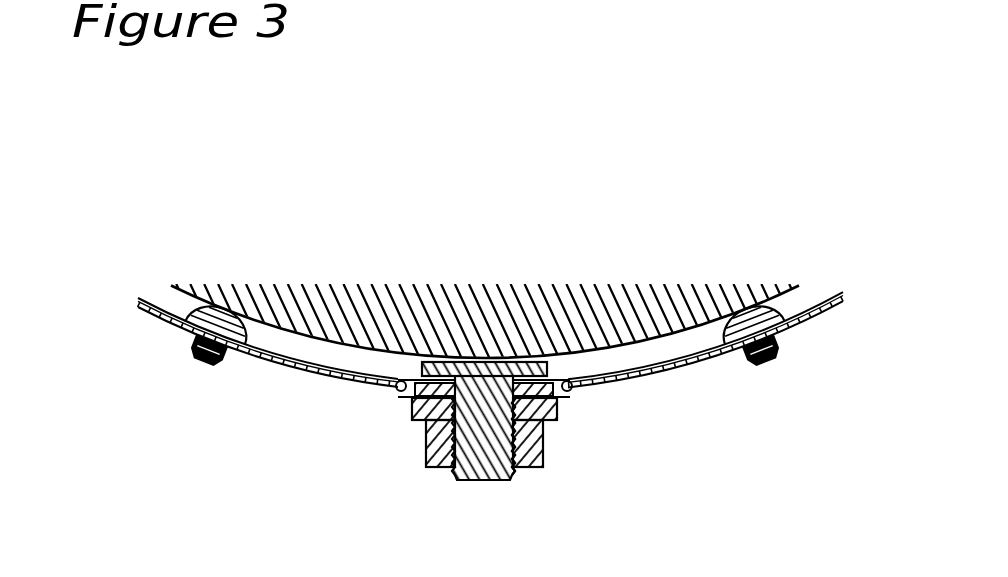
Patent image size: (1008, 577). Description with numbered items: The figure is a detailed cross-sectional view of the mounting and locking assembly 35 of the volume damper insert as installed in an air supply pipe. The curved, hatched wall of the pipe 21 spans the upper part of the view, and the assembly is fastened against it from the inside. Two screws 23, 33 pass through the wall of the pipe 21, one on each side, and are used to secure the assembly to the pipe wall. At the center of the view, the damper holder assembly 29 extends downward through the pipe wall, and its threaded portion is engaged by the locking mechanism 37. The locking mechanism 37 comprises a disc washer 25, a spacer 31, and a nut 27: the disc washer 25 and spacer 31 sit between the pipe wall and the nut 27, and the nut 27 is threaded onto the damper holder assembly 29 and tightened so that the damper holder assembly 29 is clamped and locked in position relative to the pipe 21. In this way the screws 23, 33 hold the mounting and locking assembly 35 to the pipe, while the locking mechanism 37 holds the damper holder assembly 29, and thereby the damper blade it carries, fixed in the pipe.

The pipe 21 is at (150, 304).
The screw 23 is at (205, 366).
The disc washer 25 is at (395, 392).
The nut 27 is at (425, 448).
The damper holder assembly 29 is at (478, 485).
The spacer 31 is at (560, 408).
The screw 33 is at (772, 358).
The mounting and locking assembly 35 is at (594, 273).
The locking mechanism 37 is at (545, 477).